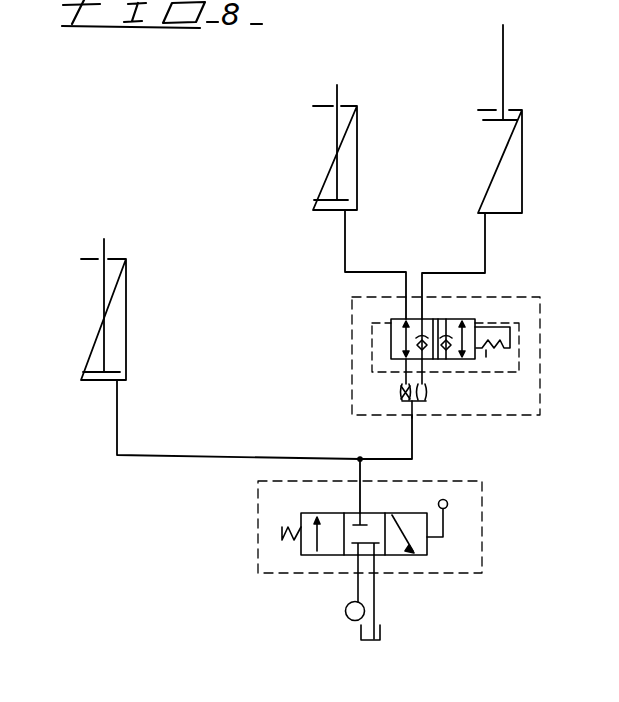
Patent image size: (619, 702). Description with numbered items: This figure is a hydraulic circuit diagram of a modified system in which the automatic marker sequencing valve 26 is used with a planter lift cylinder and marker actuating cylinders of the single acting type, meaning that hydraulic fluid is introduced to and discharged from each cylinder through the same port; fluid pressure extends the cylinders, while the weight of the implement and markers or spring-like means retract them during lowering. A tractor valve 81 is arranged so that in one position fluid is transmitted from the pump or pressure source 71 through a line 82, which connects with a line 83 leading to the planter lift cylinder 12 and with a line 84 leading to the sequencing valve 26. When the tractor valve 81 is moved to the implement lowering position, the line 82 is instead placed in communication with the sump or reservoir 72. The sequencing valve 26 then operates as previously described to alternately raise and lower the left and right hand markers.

The planter lift cylinder 12 is at (81, 289).
The automatic marker sequencing valve 26 is at (597, 258).
The pump or pressure source 71 is at (350, 621).
The sump or reservoir 72 is at (436, 627).
The tractor valve 81 is at (482, 506).
The line 82 is at (360, 471).
The line 83 is at (205, 456).
The line 84 is at (412, 452).